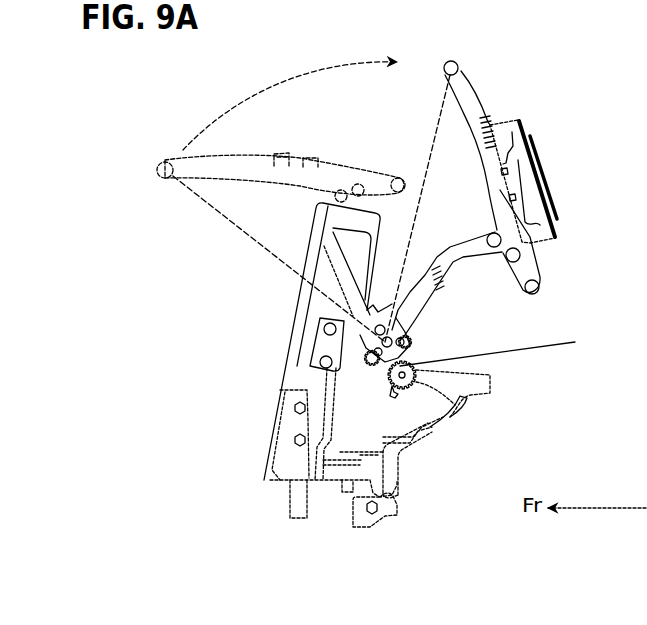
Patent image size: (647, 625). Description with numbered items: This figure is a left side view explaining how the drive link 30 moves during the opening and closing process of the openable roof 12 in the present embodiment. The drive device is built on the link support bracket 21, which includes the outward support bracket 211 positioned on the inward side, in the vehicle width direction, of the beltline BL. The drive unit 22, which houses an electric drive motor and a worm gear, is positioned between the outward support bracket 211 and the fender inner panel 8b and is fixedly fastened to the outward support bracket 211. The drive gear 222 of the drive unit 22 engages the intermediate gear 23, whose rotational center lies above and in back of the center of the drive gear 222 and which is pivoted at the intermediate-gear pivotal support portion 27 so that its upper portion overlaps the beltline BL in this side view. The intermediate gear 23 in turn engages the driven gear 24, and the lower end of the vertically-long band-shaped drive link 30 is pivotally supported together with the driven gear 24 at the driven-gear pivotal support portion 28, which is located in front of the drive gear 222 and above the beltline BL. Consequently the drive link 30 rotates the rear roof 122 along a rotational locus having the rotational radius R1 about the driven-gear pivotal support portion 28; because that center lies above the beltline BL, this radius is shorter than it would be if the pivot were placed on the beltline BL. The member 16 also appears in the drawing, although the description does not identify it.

The drive link 30 is at (329, 167).
The rear roof 122 is at (567, 175).
The openable roof 12 is at (544, 142).
The support frame 16 is at (296, 317).
The driven-gear pivotal support portion 28 is at (362, 342).
The driven gear 24 is at (369, 362).
The intermediate gear 23 is at (411, 356).
The intermediate-gear pivotal support portion 27 is at (467, 402).
The drive gear 222 is at (407, 399).
The link support bracket 21 is at (413, 453).
The fender inner panel 8b is at (266, 459).
The outward support bracket 211 is at (296, 503).
The drive unit 22 is at (337, 490).
The rotational radius R1 is at (227, 218).
The beltline BL is at (492, 352).